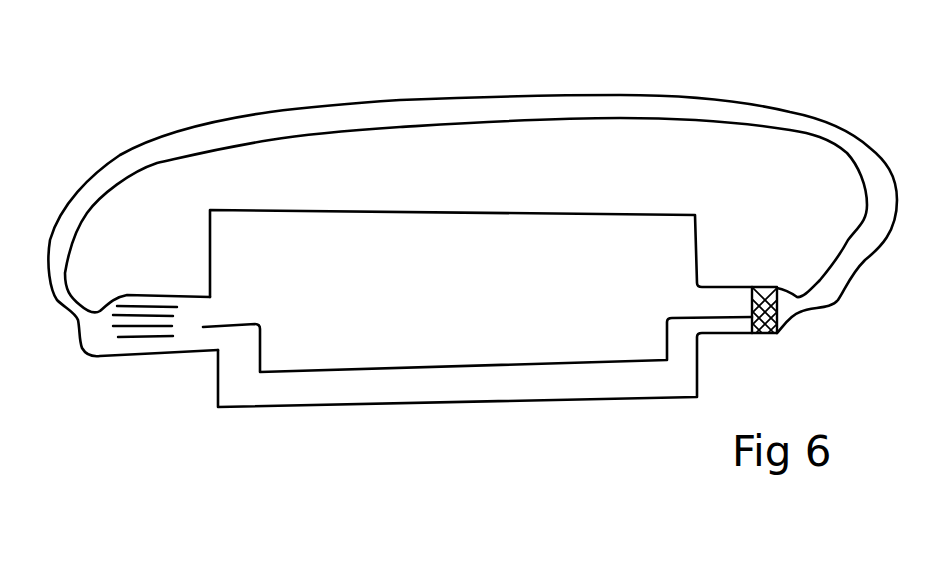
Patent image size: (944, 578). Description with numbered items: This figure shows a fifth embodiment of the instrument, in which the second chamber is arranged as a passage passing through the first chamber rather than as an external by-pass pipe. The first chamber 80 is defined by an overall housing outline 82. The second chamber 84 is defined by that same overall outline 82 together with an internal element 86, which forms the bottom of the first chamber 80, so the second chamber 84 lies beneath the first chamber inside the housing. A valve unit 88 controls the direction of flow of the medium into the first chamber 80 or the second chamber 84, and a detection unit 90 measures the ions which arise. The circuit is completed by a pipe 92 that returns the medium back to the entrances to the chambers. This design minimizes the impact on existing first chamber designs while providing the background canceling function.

The first chamber 80 is at (432, 270).
The overall housing outline 82 is at (613, 213).
The second chamber 84 is at (413, 400).
The internal element 86 is at (573, 362).
The valve unit 88 is at (772, 333).
The detection unit 90 is at (137, 337).
The pipe 92 is at (273, 128).